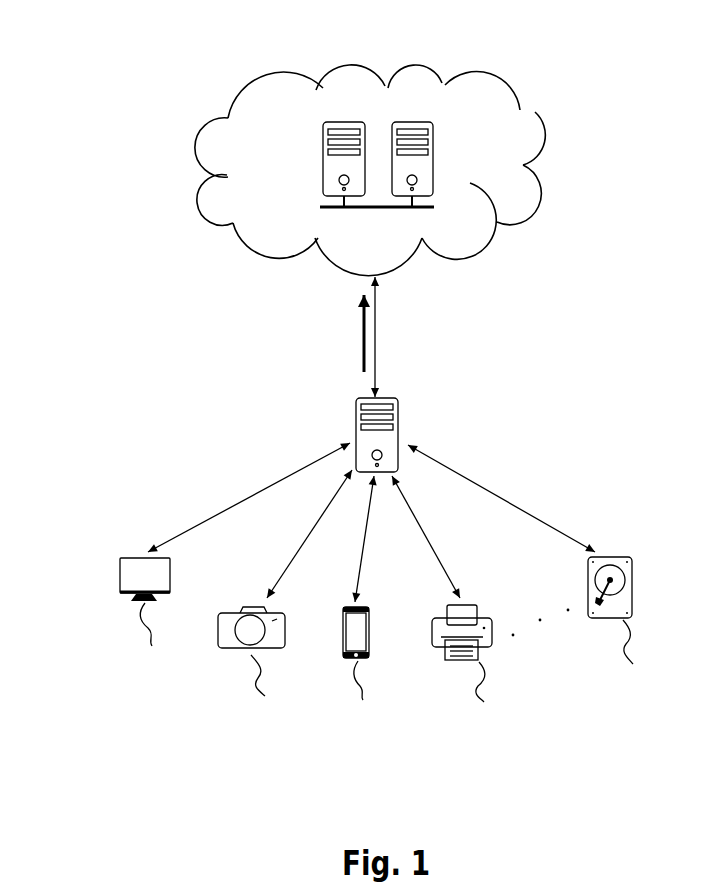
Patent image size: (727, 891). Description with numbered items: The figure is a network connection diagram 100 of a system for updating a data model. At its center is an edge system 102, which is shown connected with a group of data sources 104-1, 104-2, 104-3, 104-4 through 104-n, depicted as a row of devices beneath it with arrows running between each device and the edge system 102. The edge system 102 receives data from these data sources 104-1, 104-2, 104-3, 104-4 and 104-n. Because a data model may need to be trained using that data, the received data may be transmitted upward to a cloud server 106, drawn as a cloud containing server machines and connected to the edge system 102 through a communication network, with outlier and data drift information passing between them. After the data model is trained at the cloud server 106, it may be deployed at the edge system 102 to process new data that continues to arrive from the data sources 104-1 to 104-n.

The network connection diagram 100 is at (118, 72).
The edge system 102 is at (398, 405).
The data source 104-1 is at (151, 620).
The data source 104-2 is at (257, 671).
The data source 104-3 is at (370, 672).
The data source 104-4 is at (474, 671).
The data source 104-n is at (621, 632).
The cloud server 106 is at (532, 110).